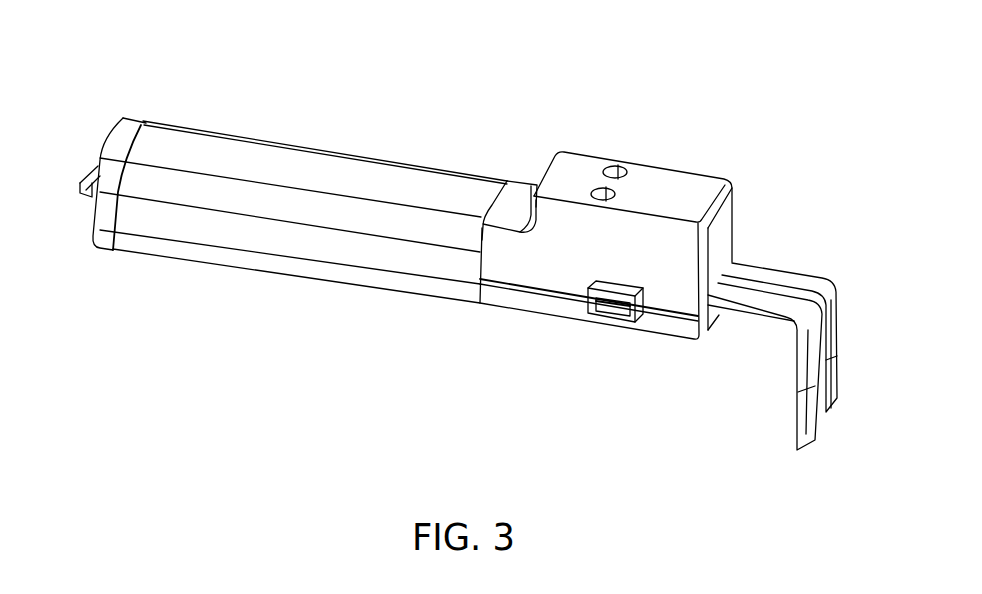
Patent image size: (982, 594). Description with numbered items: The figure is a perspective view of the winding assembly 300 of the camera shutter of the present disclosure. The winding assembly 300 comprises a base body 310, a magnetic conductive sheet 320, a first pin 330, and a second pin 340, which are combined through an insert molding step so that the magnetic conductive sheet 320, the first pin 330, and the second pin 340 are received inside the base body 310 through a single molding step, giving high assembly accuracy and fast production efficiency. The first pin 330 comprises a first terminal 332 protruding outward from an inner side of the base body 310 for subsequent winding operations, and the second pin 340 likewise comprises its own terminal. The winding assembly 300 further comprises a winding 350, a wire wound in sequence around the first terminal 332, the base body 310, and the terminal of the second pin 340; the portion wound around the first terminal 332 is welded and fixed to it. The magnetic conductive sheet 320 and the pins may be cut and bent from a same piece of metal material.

The winding assembly 300 is at (257, 45).
The base body 310 is at (647, 172).
The magnetic conductive sheet 320 is at (78, 181).
The first pin 330 is at (800, 428).
The first terminal 332 is at (607, 310).
The second pin 340 is at (832, 405).
The winding 350 is at (355, 172).